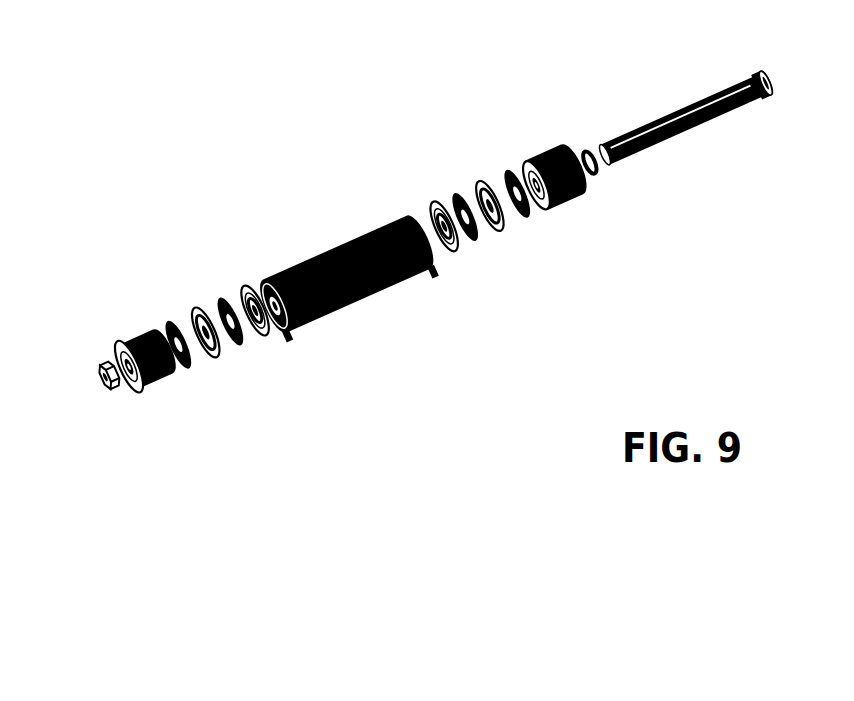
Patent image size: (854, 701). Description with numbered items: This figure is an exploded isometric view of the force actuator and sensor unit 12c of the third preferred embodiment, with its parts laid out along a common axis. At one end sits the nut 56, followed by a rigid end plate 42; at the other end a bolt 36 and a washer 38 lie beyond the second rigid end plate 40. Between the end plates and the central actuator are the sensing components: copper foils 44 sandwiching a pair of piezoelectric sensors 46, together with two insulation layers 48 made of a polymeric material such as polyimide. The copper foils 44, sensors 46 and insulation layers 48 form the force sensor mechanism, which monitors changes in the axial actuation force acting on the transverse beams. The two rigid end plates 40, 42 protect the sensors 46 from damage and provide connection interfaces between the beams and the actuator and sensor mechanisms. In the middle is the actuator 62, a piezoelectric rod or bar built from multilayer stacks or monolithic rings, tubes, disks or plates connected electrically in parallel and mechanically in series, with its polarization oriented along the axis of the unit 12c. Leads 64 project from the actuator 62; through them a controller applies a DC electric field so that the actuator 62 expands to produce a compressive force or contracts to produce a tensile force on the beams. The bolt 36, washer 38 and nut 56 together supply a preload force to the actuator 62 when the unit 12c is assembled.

The force actuator and sensor unit 12c is at (292, 99).
The bolt 36 is at (703, 91).
The washer 38 is at (580, 133).
The rigid end plate 40 is at (586, 214).
The rigid end plate 42 is at (132, 317).
The copper foil 44 is at (173, 300).
The sensor 46 is at (226, 370).
The insulation layer 48 is at (245, 277).
The nut 56 is at (97, 353).
The actuator 62 is at (334, 249).
The lead 64 is at (304, 351).